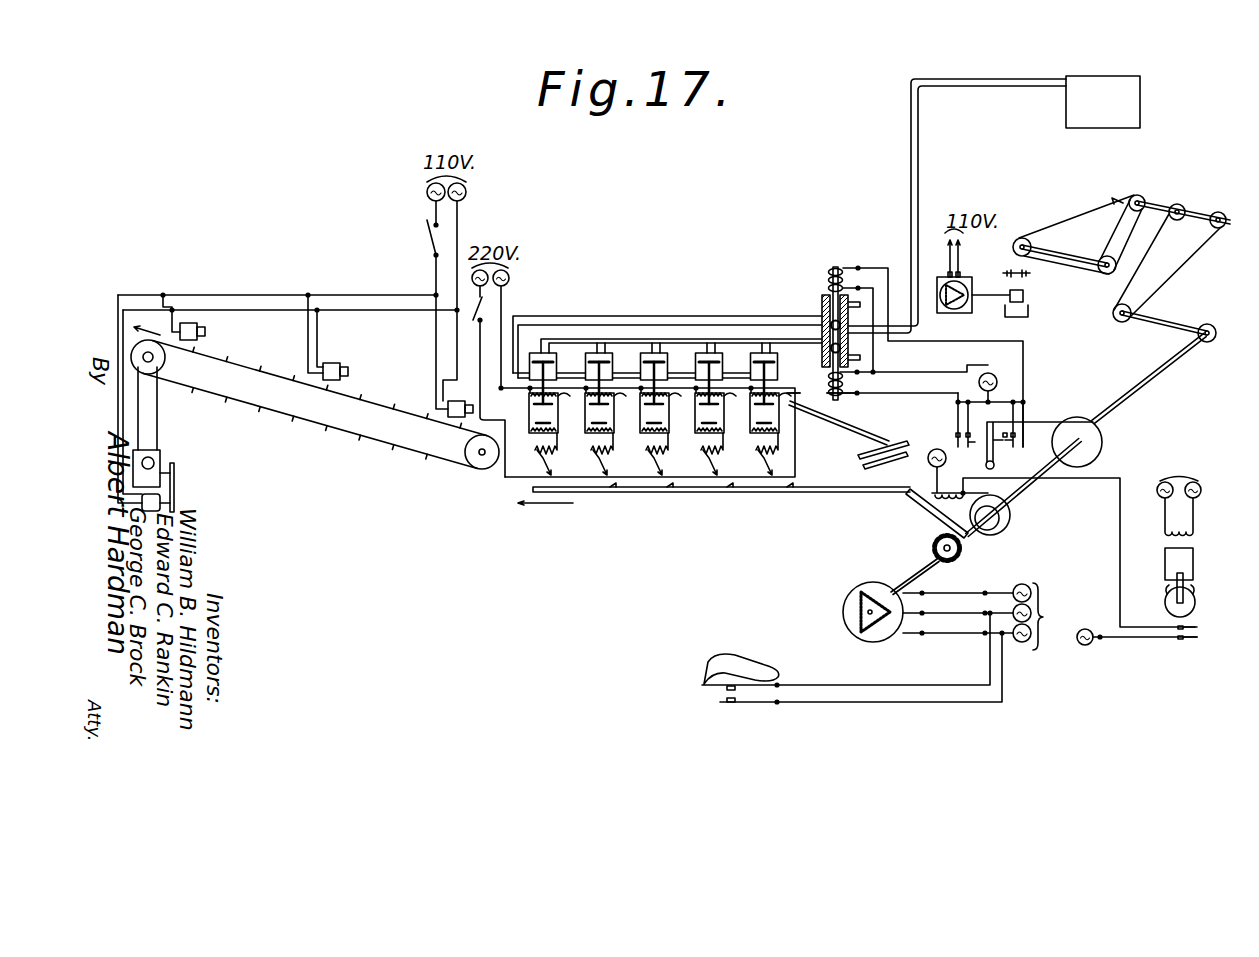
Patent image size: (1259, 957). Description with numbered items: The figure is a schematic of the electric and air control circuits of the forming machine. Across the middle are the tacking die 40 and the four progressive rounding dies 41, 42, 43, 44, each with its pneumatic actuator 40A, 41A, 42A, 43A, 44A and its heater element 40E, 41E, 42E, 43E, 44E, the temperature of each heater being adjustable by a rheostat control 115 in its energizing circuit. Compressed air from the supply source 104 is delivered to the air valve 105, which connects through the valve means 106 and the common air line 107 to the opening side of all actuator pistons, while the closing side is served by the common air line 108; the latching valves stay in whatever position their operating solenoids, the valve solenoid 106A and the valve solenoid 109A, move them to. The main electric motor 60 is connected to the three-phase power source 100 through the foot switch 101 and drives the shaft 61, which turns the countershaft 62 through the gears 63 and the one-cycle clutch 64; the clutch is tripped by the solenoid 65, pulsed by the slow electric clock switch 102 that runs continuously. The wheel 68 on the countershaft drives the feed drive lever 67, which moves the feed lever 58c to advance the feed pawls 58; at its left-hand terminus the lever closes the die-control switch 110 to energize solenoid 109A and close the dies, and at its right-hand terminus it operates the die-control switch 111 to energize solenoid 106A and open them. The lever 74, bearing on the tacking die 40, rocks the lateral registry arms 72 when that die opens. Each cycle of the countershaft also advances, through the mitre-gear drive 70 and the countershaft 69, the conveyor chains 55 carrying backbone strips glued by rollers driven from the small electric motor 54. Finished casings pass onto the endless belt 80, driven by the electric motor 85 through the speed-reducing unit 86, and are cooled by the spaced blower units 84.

The compressed air supply source 104 is at (1066, 107).
The conveyor chains 55 is at (1118, 247).
The electric motor 54 is at (946, 283).
The valve solenoid 106A is at (848, 275).
The air valve 105 is at (822, 300).
The common air line 107 is at (795, 316).
The pneumatic actuator 44A is at (548, 348).
The pneumatic actuator 43A is at (607, 348).
The pneumatic actuator 42A is at (663, 348).
The pneumatic actuator 41A is at (717, 348).
The pneumatic actuator 40A is at (770, 348).
The common air line 108 is at (681, 352).
The valve means 106 is at (848, 348).
The heater element 44E is at (529, 398).
The heater element 43E is at (612, 395).
The heater element 42E is at (667, 395).
The heater element 41E is at (722, 395).
The heater element 40E is at (774, 395).
The rounding die 44 is at (543, 413).
The rounding die 43 is at (599, 413).
The rounding die 42 is at (654, 413).
The rounding die 41 is at (709, 413).
The tacking die 40 is at (764, 413).
The lever 74 is at (822, 394).
The valve solenoid 109A is at (845, 405).
The die-control switch 110 is at (955, 433).
The die-control switch 111 is at (1024, 437).
The solenoid 65 is at (951, 488).
The feed drive lever 67 is at (994, 461).
The wheel 68 is at (1085, 418).
The countershaft 69 is at (1156, 318).
The mitre-gear drive 70 is at (1224, 324).
The rheostat control 115 is at (758, 452).
The feed pawls 58 is at (792, 487).
The lateral registry arms 72 is at (894, 462).
The feed lever 58c is at (926, 512).
The countershaft 62 is at (1009, 506).
The one-cycle clutch 64 is at (1004, 521).
The gears 63 is at (929, 548).
The shaft 61 is at (928, 568).
The electric motor 60 is at (858, 640).
The three-phase power source 100 is at (1056, 596).
The foot switch 101 is at (712, 699).
The electric clock switch 102 is at (1203, 622).
The blower units 84 is at (205, 331).
The speed-reducing unit 86 is at (160, 458).
The electric motor 85 is at (163, 510).
The endless belt 80 is at (328, 430).